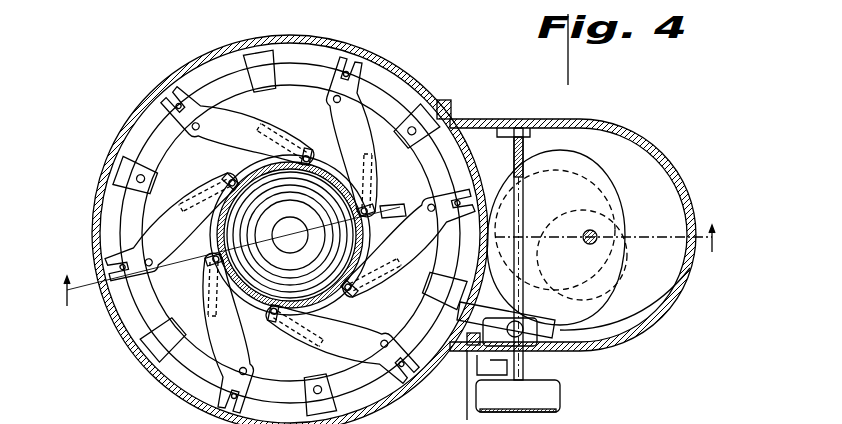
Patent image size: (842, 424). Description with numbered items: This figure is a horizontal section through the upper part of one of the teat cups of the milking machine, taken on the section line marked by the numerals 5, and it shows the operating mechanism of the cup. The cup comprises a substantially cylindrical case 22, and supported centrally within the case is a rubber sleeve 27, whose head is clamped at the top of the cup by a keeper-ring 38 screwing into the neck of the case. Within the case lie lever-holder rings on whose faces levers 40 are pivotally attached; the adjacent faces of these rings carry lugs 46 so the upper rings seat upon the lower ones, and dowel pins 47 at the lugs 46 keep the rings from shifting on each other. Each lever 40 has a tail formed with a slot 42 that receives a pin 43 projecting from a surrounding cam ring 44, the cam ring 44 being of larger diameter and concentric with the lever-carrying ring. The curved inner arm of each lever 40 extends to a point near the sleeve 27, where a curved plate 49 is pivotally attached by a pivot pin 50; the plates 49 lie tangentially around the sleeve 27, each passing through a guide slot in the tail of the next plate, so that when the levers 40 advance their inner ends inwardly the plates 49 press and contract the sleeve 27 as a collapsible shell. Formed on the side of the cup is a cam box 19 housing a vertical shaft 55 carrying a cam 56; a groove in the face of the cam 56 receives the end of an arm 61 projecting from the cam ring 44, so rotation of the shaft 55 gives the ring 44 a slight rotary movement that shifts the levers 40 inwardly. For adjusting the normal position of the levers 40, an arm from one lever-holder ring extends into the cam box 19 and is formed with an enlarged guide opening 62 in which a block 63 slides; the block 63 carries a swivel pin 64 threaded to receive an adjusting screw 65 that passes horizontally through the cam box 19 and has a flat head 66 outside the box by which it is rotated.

The guide-stems 5 is at (389, 256).
The cam box 19 is at (688, 194).
The case 22 is at (127, 333).
The sleeve 27 is at (320, 182).
The keeper-ring 38 is at (128, 423).
The levers 40 is at (243, 122).
The slots 42 is at (413, 389).
The pins 43 is at (393, 370).
The cam rings 44 is at (323, 62).
The lugs 46 is at (133, 170).
The dowel pins 47 is at (414, 130).
The curved plate 49 is at (388, 214).
The pivot pin 50 is at (342, 96).
The vertical shaft 55 is at (596, 232).
The cam 56 is at (578, 184).
The arms 61 is at (640, 302).
The guide opening 62 is at (524, 374).
The block 63 is at (553, 335).
The swivel pin 64 is at (560, 312).
The adjusting screw 65 is at (527, 149).
The flat head 66 is at (547, 399).